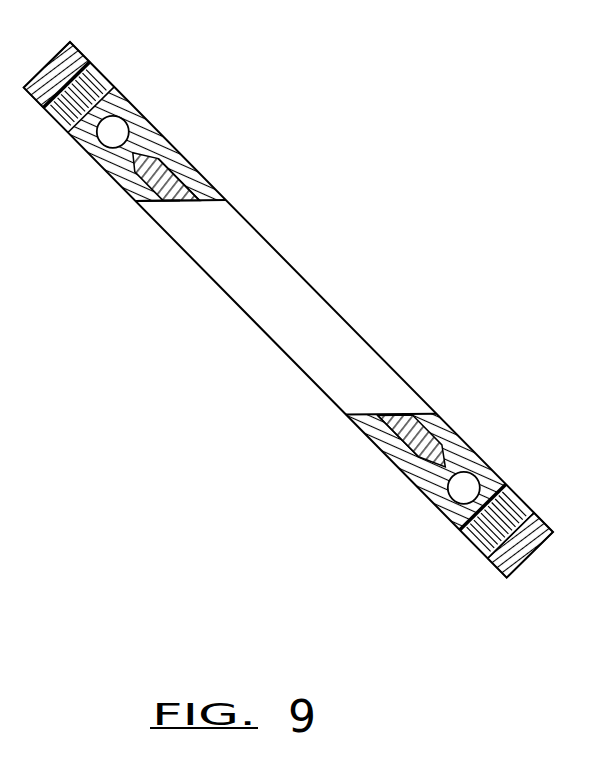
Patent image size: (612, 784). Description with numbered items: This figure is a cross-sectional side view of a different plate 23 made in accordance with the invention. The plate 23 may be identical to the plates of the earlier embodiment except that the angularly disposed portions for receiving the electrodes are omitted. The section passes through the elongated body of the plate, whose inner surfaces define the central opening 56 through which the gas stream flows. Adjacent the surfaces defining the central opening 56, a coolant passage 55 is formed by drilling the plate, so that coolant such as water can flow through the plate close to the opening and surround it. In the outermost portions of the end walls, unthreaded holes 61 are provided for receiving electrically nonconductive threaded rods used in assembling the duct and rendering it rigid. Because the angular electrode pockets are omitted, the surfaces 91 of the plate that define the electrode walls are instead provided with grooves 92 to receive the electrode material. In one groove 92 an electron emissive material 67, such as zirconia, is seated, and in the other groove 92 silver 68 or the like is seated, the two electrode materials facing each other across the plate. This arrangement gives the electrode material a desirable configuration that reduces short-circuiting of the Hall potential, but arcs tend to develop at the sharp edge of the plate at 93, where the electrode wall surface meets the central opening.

The plate 23 is at (85, 150).
The coolant passage 55 is at (127, 117).
The central opening 56 is at (295, 268).
The unthreaded holes 61 is at (98, 80).
The electron emissive material 67 is at (175, 196).
The silver 68 is at (400, 422).
The surfaces 91 is at (155, 200).
The grooves 92 is at (188, 188).
The sharp edge of the plate 93 is at (227, 199).